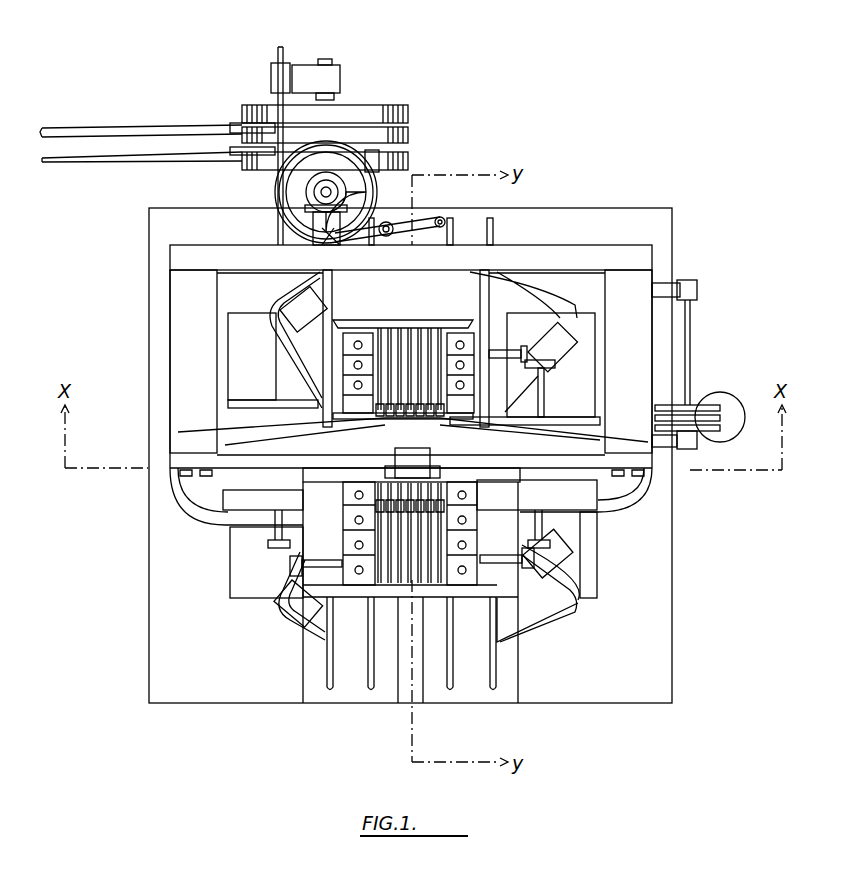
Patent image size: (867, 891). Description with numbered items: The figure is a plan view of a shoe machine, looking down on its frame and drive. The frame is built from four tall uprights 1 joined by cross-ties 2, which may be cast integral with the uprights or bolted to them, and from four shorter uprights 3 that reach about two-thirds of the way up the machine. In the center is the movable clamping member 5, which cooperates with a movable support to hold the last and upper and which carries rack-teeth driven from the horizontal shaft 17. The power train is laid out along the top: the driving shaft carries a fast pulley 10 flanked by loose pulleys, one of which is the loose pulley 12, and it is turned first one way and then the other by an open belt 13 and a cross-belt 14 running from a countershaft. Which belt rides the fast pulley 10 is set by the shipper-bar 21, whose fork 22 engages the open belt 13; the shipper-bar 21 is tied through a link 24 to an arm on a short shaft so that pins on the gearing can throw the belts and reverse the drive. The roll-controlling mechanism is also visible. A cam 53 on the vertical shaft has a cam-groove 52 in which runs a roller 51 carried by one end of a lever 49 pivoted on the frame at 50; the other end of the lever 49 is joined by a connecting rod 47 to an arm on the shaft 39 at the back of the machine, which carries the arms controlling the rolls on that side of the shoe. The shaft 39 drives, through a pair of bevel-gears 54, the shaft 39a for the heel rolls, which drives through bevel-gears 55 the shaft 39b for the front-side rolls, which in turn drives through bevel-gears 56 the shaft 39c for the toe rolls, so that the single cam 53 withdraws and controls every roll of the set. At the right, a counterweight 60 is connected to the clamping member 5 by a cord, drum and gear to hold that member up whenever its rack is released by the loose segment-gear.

The upright 1 is at (178, 352).
The cross-tie 2 is at (575, 258).
The upright 3 is at (360, 628).
The movable clamping member 5 is at (420, 462).
The fast pulley 10 is at (410, 140).
The loose pulley 12 is at (407, 108).
The open belt 13 is at (74, 130).
The cross-belt 14 is at (145, 160).
The horizontal shaft 17 is at (332, 305).
The shipper-bar 21 is at (284, 56).
The fork 22 is at (240, 126).
The link 24 is at (276, 368).
The shaft 39 is at (515, 350).
The shaft 39a is at (545, 396).
The shaft 39b is at (520, 556).
The shaft 39c is at (270, 538).
The connecting rod 47 is at (470, 232).
The lever 49 is at (442, 218).
The pivot 50 is at (423, 211).
The roller 51 is at (326, 248).
The cam-groove 52 is at (284, 190).
The cam 53 is at (290, 230).
The bevel-gears 54 is at (551, 346).
The bevel-gears 55 is at (539, 585).
The bevel-gears 56 is at (290, 565).
The counterweight 60 is at (718, 402).